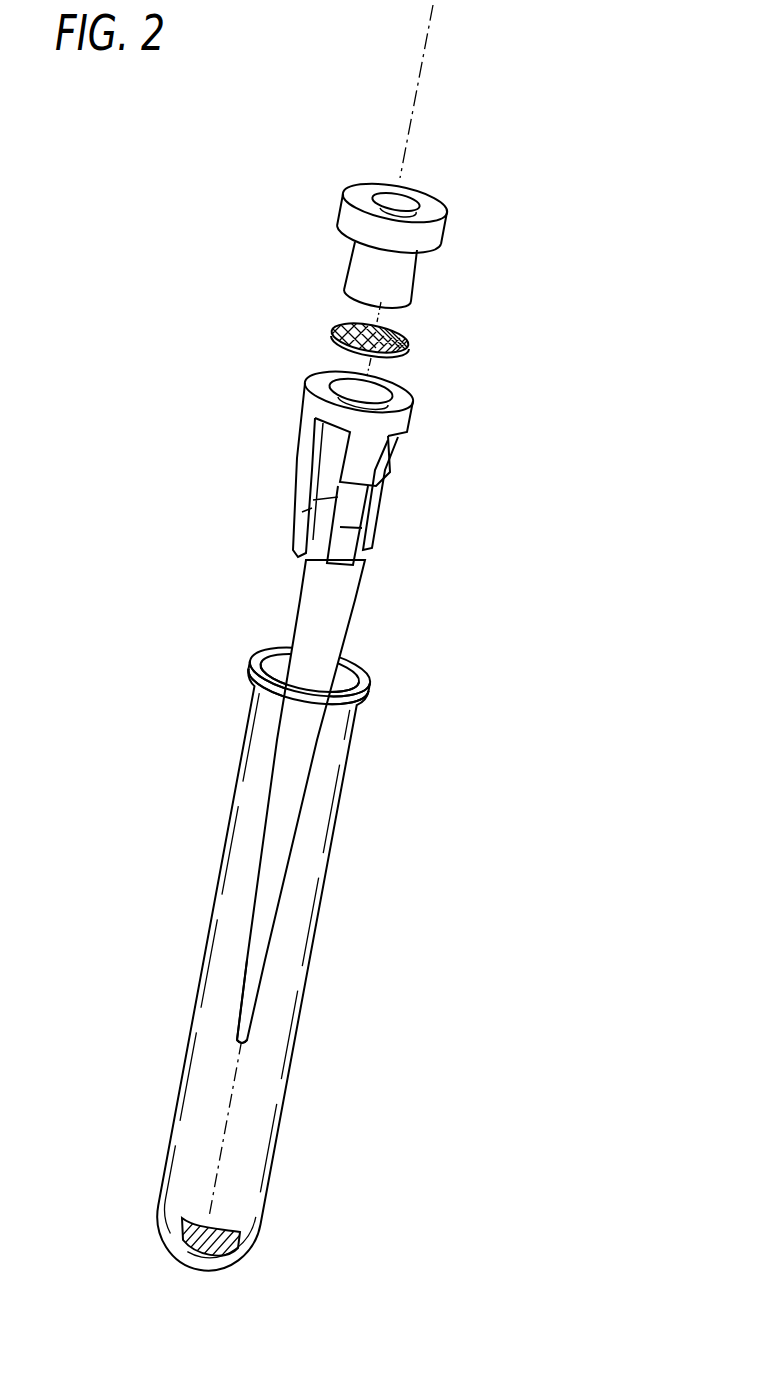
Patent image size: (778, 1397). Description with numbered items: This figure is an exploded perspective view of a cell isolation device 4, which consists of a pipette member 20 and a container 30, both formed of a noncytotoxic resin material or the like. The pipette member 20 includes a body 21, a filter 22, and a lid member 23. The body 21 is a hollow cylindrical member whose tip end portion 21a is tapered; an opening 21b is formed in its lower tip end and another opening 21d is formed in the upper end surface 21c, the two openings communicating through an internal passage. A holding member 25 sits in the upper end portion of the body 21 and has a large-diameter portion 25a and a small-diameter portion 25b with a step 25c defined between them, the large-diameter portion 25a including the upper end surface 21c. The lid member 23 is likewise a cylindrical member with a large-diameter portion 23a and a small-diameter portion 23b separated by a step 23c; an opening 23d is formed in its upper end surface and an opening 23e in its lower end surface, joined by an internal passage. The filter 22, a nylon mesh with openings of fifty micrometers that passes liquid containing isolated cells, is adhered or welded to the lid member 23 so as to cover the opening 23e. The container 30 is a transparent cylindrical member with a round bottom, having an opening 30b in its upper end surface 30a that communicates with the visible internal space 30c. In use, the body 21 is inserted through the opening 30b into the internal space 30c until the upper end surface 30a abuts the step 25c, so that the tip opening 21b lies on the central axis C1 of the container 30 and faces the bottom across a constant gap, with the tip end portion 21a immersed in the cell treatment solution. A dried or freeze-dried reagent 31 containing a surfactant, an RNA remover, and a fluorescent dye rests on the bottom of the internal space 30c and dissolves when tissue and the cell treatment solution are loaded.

The cell isolation device 4 is at (578, 155).
The pipette member 20 is at (276, 361).
The body 21 is at (345, 611).
The tip end portion 21a is at (247, 1012).
The opening 21b is at (244, 1043).
The upper end surface 21c is at (330, 388).
The opening 21d is at (395, 385).
The filter 22 is at (410, 340).
The lid member 23 is at (447, 253).
The large-diameter portion 23a is at (347, 221).
The small-diameter portion 23b is at (350, 265).
The step 23c is at (345, 233).
The opening 23d is at (412, 205).
The opening 23e is at (403, 310).
The holding member 25 is at (415, 483).
The large-diameter portion 25a is at (300, 428).
The small-diameter portion 25b is at (292, 500).
The step 25c is at (300, 463).
The container 30 is at (198, 1012).
The upper end surface 30a is at (275, 650).
The opening 30b is at (260, 652).
The internal space 30c is at (290, 968).
The reagent 31 is at (187, 1232).
The central axis C1 is at (222, 1155).